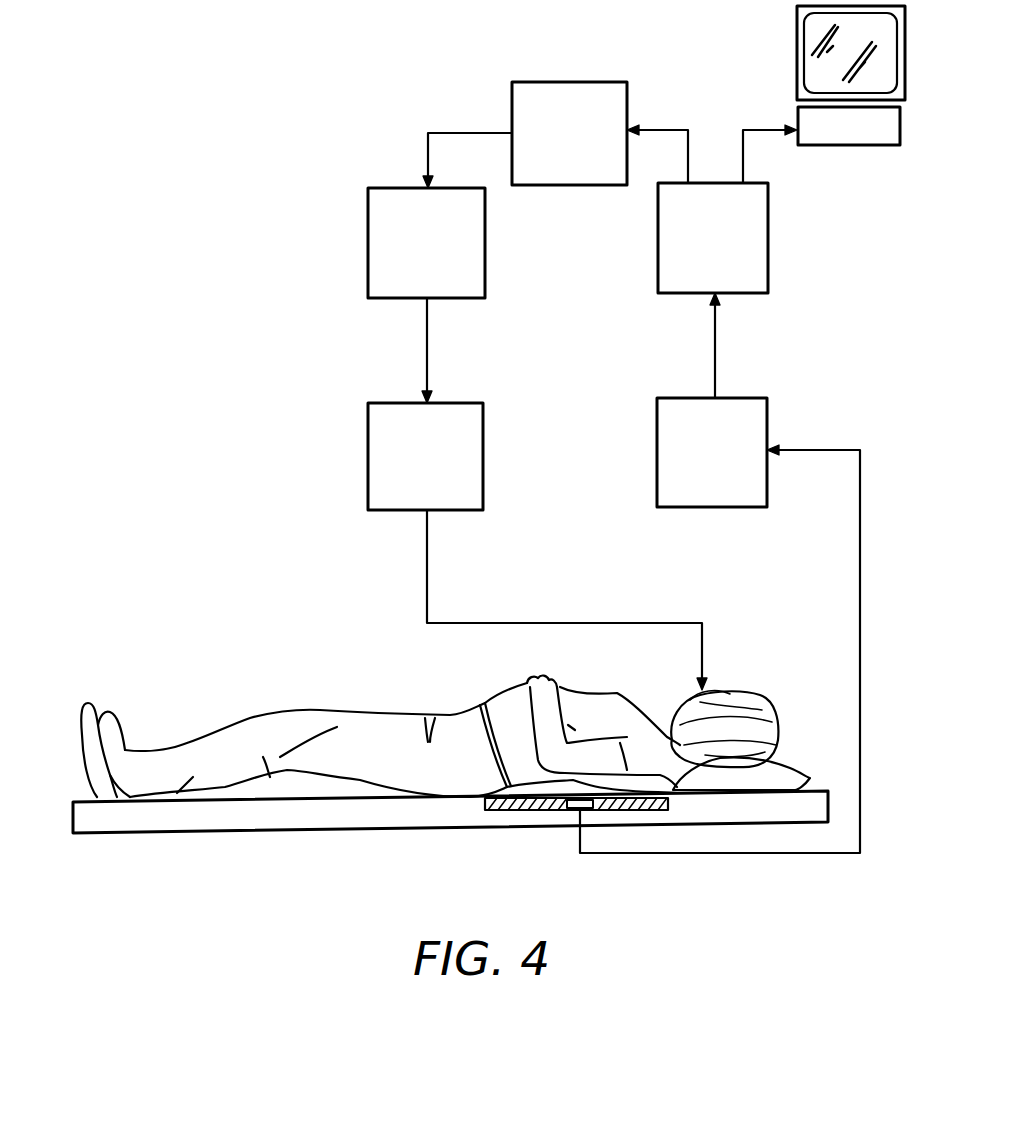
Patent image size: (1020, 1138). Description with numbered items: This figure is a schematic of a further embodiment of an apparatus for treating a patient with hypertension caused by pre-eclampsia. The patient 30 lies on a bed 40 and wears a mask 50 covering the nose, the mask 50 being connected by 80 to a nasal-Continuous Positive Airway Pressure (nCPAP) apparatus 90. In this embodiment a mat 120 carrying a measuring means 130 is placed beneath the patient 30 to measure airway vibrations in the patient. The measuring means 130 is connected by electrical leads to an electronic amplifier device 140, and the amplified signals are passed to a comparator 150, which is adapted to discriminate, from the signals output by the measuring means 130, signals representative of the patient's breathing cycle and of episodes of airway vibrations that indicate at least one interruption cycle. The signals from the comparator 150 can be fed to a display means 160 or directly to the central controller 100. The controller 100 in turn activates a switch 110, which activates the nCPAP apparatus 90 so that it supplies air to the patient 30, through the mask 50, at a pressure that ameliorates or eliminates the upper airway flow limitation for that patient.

The patient 30 is at (218, 747).
The bed 40 is at (222, 823).
The mask 50 is at (707, 693).
The connection 80 is at (427, 560).
The nCPAP apparatus 90 is at (368, 457).
The central controller 100 is at (512, 115).
The switch 110 is at (368, 218).
The mat 120 is at (477, 810).
The measuring means 130 is at (577, 812).
The electronic amplifier device 140 is at (767, 423).
The comparator 150 is at (768, 258).
The display means 160 is at (860, 147).